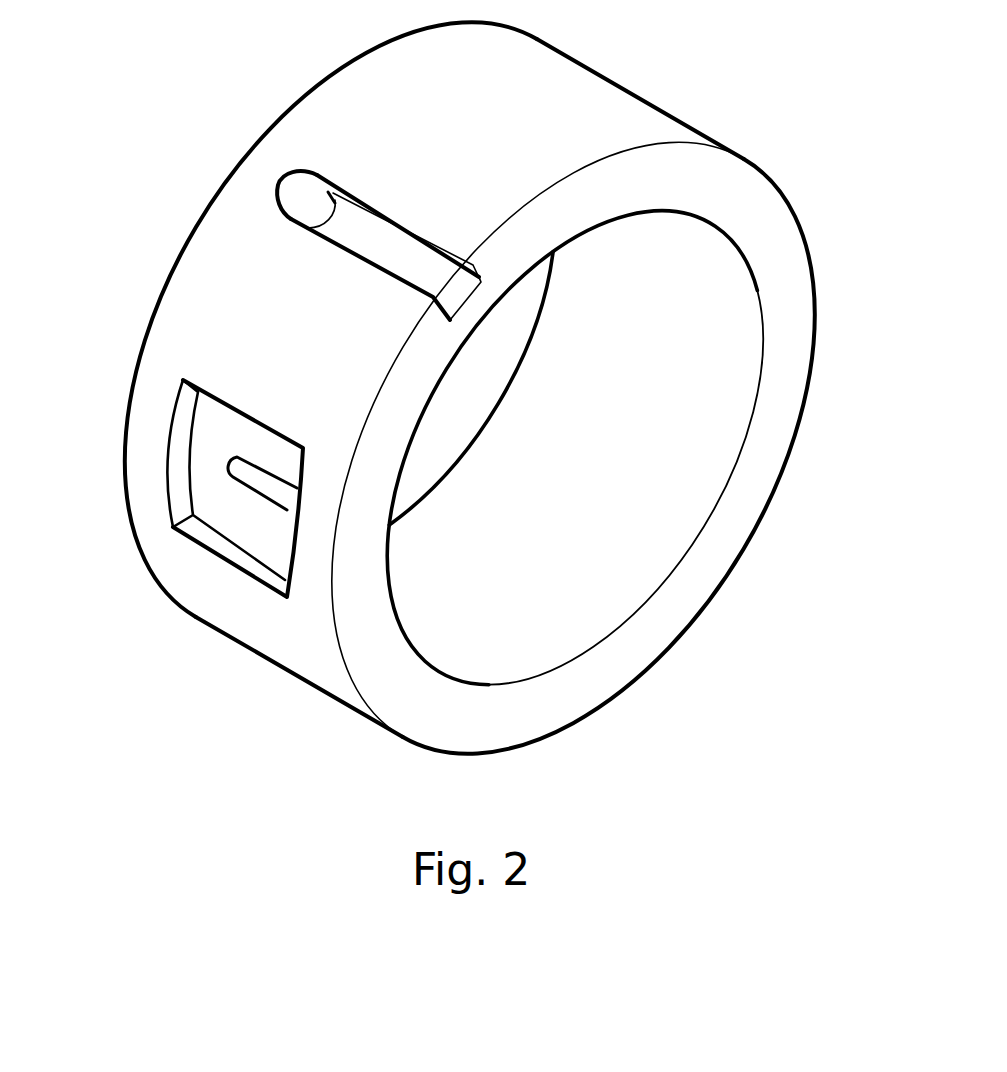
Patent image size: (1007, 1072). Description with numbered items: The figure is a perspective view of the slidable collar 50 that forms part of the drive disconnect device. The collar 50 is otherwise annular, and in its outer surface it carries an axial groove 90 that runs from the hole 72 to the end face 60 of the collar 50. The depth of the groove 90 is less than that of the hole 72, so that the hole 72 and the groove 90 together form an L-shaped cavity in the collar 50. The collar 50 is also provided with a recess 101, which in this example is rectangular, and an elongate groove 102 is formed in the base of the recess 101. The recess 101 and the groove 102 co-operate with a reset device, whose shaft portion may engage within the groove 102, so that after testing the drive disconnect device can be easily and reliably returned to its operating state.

The collar 50 is at (613, 80).
The end face 60 is at (757, 483).
The axial groove 90 is at (362, 242).
The hole 72 is at (310, 203).
The recess 101 is at (217, 517).
The elongate groove 102 is at (254, 472).